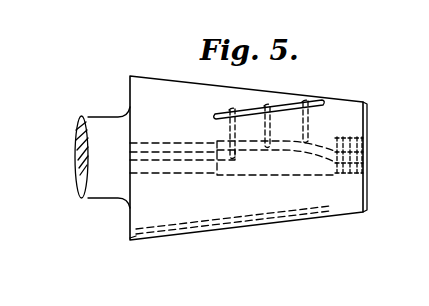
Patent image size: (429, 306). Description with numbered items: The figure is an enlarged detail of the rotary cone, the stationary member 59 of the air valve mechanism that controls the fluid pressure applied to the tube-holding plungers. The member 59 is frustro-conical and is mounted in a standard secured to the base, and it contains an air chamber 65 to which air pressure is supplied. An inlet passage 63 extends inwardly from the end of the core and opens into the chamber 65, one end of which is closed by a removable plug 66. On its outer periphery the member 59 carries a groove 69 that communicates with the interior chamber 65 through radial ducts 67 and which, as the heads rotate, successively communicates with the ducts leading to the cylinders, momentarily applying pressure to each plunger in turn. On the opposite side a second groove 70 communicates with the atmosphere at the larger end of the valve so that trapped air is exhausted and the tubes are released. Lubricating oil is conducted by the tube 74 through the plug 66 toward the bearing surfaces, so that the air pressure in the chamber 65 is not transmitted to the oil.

The stationary member 59 is at (342, 210).
The inlet passage 63 is at (98, 165).
The air chamber 65 is at (325, 170).
The removable plug 66 is at (360, 168).
The radial ducts 67 is at (267, 126).
The groove 69 is at (285, 106).
The groove 70 is at (143, 238).
The tube 74 is at (320, 152).